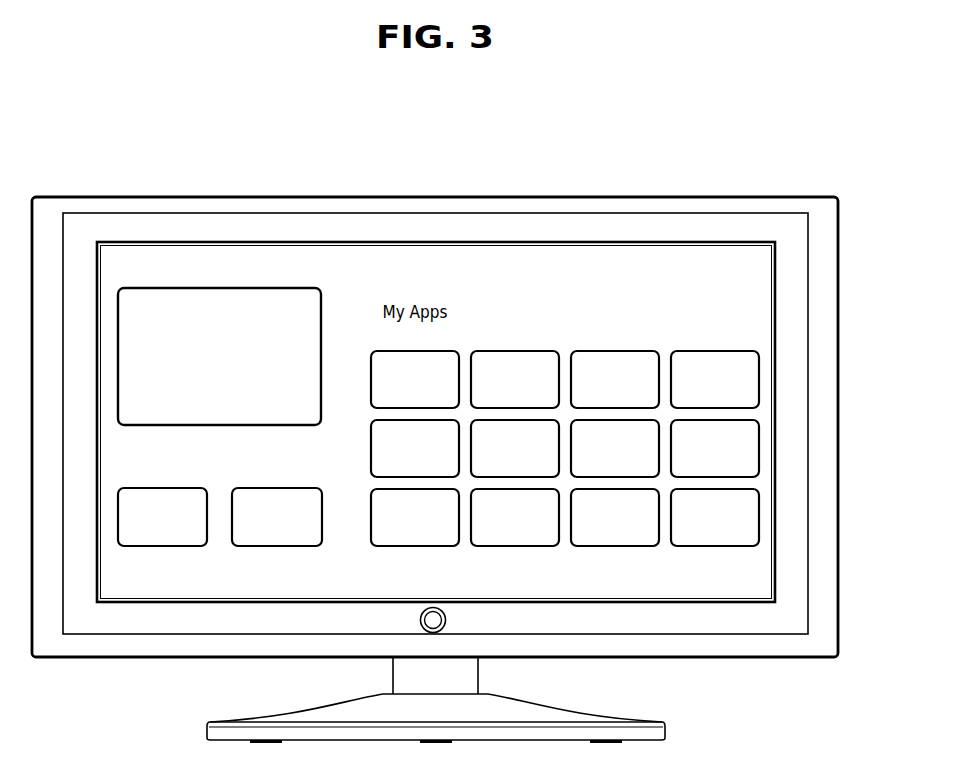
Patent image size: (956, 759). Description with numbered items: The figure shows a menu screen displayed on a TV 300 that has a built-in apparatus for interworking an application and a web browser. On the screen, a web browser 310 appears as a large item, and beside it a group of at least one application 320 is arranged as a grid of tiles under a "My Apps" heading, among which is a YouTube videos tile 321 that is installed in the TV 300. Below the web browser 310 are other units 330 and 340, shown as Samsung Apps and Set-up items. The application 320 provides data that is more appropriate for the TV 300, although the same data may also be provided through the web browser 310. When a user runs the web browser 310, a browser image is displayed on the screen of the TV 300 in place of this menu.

The TV 300 is at (437, 197).
The web browser 310 is at (222, 288).
The application 320 is at (371, 351).
The You Tube videos application item 321 is at (614, 351).
The other unit 330 is at (162, 488).
The other unit 340 is at (278, 488).